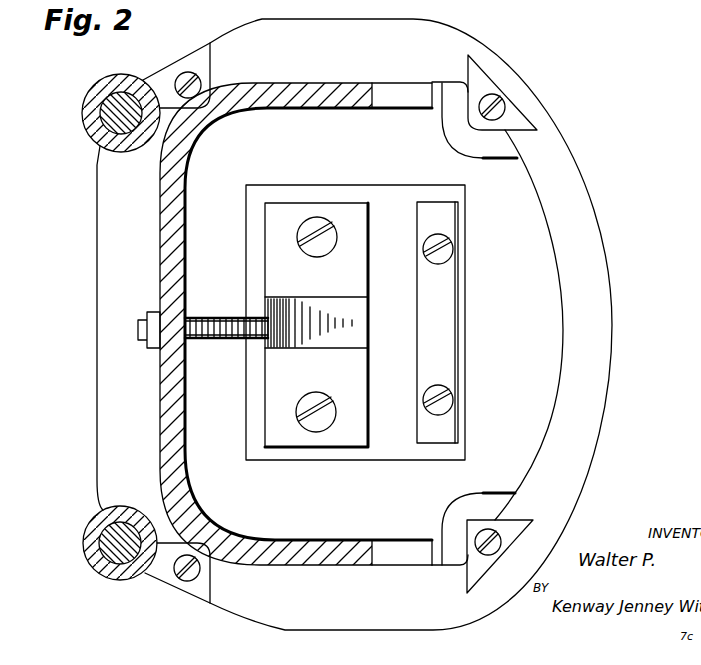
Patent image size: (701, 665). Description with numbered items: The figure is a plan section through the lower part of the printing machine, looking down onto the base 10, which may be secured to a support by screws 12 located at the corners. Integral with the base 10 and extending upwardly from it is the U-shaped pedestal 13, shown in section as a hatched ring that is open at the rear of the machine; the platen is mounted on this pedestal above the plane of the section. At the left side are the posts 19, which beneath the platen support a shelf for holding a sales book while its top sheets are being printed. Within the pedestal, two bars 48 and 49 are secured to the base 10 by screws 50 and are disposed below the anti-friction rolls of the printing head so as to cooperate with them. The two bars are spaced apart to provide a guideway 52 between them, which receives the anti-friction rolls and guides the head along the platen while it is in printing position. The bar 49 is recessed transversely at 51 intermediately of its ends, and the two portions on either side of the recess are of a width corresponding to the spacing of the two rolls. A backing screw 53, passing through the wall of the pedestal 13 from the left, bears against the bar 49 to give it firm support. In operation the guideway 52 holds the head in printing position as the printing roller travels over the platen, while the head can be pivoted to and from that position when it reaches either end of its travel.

The base 10 is at (598, 258).
The screws 12 is at (200, 81).
The U-shaped pedestal 13 is at (163, 258).
The posts 19 is at (93, 109).
The bar 48 is at (443, 353).
The bar 49 is at (278, 265).
The screws 50 is at (320, 237).
The recess 51 is at (323, 330).
The guideway 52 is at (400, 310).
The backing screw 53 is at (140, 331).